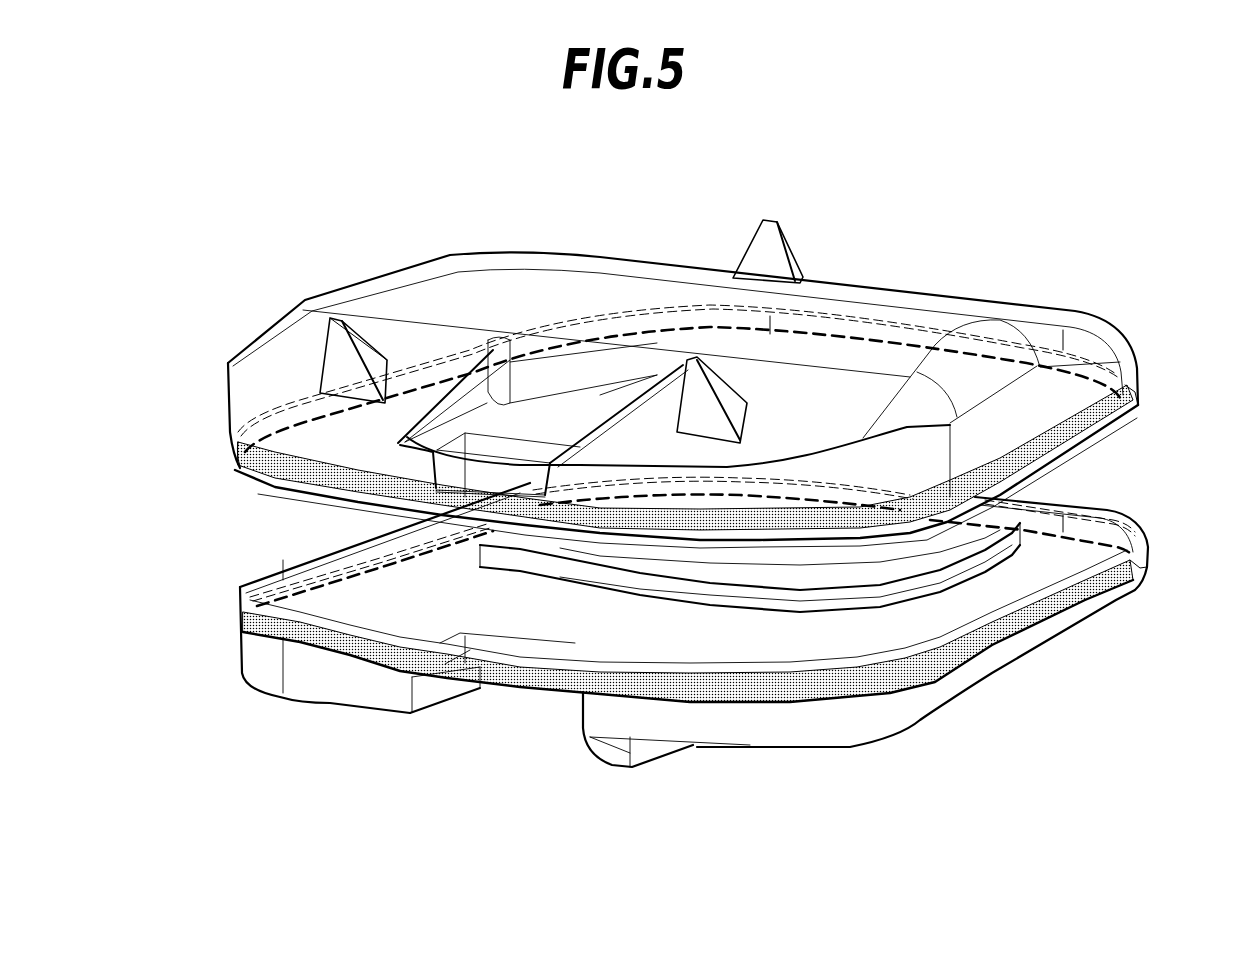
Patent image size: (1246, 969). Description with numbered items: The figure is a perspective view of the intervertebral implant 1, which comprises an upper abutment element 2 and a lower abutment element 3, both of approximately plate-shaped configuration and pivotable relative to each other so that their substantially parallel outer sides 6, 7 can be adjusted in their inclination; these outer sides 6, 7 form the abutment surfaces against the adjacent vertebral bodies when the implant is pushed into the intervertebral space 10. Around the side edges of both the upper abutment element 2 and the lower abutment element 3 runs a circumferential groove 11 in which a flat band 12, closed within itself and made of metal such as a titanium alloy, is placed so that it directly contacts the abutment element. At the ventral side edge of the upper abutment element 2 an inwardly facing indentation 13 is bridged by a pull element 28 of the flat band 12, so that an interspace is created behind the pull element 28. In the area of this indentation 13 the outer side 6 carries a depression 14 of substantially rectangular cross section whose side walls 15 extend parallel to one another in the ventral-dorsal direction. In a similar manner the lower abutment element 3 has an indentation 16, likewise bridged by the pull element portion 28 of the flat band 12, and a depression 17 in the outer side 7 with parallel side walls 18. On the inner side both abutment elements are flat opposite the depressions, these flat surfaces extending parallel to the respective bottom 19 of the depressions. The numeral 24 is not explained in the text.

The intervertebral implant 1 is at (942, 232).
The upper abutment element 2 is at (1022, 296).
The lower abutment element 3 is at (1113, 607).
The outer side 6 is at (433, 290).
The outer side 7 is at (1009, 667).
The intervertebral space 10 is at (273, 522).
The circumferential groove 11 is at (235, 468).
The flat band 12 is at (1143, 384).
The indentation 13 is at (487, 510).
The depression 14 is at (590, 386).
The side walls 15 is at (470, 400).
The indentation 16 is at (550, 650).
The depression 17 is at (578, 721).
The side walls 18 is at (447, 680).
The bottom 19 is at (523, 427).
The guide surface 24 is at (632, 390).
The pull element 28 is at (527, 467).